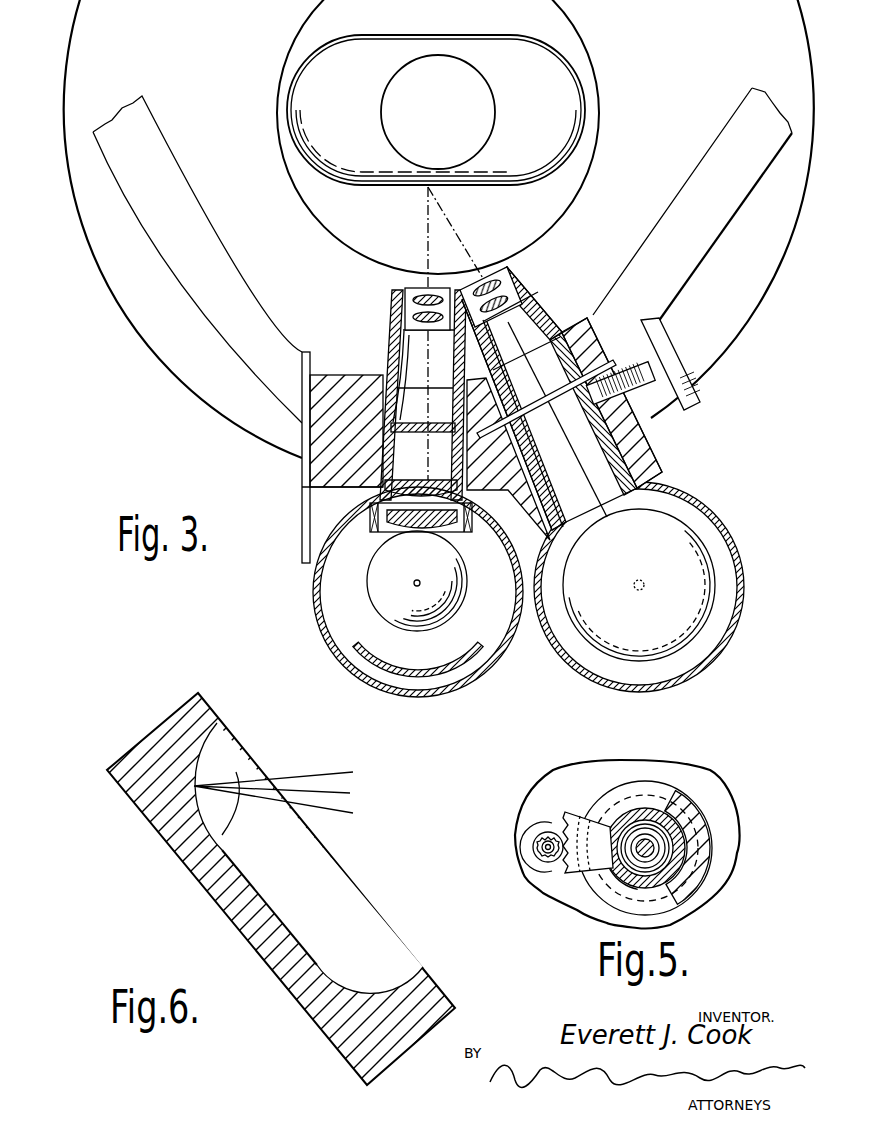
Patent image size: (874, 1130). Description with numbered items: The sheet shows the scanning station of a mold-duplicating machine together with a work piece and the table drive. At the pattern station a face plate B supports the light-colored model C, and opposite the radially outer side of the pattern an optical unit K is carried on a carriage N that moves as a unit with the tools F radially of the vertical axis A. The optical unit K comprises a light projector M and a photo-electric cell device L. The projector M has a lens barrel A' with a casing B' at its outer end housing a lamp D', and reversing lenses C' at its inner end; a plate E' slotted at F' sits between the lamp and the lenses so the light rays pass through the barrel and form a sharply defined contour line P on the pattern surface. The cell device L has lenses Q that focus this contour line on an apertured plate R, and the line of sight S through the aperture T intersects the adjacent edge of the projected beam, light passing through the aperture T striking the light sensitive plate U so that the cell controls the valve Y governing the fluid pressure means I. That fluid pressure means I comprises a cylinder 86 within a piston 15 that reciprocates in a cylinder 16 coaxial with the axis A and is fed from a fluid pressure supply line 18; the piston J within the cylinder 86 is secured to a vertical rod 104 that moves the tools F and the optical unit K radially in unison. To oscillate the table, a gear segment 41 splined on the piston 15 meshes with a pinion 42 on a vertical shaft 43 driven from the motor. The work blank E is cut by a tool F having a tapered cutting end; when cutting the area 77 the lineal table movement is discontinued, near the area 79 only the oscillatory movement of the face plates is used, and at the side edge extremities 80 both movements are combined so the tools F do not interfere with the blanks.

In FIG. 3, the face plate B is at (439, 229).
In FIG. 3, the model C is at (457, 110).
In FIG. 3, the contour line P is at (426, 192).
In FIG. 3, the line of sight S is at (473, 248).
In FIG. 3, the carriage N is at (672, 203).
In FIG. 3, the lens barrel A' is at (410, 395).
In FIG. 3, the reversing lenses C' is at (396, 309).
In FIG. 3, the plate E' is at (381, 376).
In FIG. 3, the slot F' is at (423, 412).
In FIG. 3, the casing B' is at (418, 609).
In FIG. 3, the lamp D' is at (386, 597).
In FIG. 3, the light projector M is at (495, 650).
In FIG. 3, the photo-electric cell device L is at (725, 543).
In FIG. 3, the light sensitive plate U is at (710, 620).
In FIG. 3, the valve Y is at (639, 580).
In FIG. 3, the optical unit K is at (657, 447).
In FIG. 3, the lenses Q is at (505, 282).
In FIG. 3, the apertured plate R is at (557, 385).
In FIG. 3, the aperture T is at (550, 398).
In FIG. 5, the cylinder 16 is at (670, 903).
In FIG. 5, the piston J is at (677, 830).
In FIG. 5, the cylinder 86 is at (637, 827).
In FIG. 5, the vertical rod 104 is at (657, 850).
In FIG. 5, the fluid pressure means I is at (667, 840).
In FIG. 5, the vertical axis A is at (663, 799).
In FIG. 5, the piston 15 is at (617, 877).
In FIG. 5, the gear segment 41 is at (607, 827).
In FIG. 5, the vertical shaft 43 is at (547, 867).
In FIG. 5, the pinion 42 is at (537, 850).
In FIG. 6, the work blank E is at (281, 889).
In FIG. 6, the fluid pressure supply line 18 is at (318, 963).
In FIG. 6, the area 79 is at (420, 968).
In FIG. 6, the side edge extremities 80 is at (226, 737).
In FIG. 6, the area 77 is at (239, 790).
In FIG. 6, the tool F is at (273, 777).